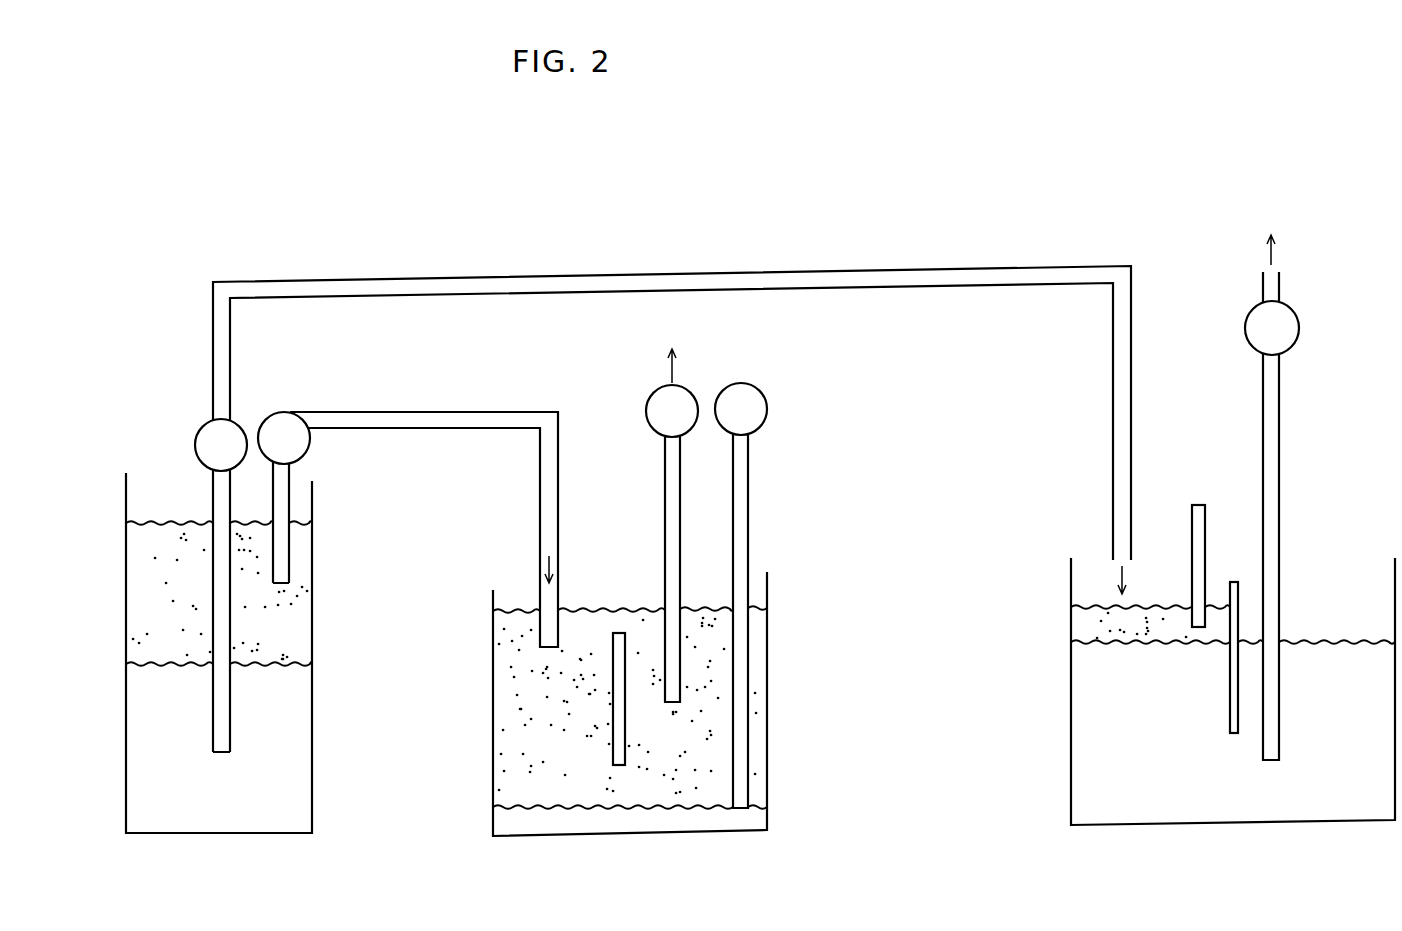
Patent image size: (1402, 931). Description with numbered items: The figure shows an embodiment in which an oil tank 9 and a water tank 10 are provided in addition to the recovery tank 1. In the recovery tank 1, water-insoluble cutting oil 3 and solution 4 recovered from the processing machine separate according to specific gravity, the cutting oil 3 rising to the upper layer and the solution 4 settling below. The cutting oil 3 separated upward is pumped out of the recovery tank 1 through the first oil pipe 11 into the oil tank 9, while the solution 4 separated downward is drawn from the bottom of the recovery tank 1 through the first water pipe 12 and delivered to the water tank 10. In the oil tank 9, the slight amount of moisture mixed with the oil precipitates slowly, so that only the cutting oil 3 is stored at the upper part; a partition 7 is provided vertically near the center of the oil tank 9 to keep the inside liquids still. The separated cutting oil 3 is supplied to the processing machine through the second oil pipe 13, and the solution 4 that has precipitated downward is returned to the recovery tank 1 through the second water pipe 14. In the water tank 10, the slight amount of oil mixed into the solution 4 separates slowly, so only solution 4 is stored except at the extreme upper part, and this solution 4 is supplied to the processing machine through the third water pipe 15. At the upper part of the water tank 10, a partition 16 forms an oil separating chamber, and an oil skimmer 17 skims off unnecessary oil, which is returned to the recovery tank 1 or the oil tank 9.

The recovery tank 1 is at (322, 770).
The water-insoluble cutting oil 3 is at (161, 605).
The solution 4 is at (154, 735).
The partition 7 is at (627, 737).
The oil tank 9 is at (778, 733).
The water tank 10 is at (1060, 735).
The first oil pipe 11 is at (378, 410).
The first water pipe 12 is at (340, 280).
The second oil pipe 13 is at (663, 489).
The second water pipe 14 is at (749, 495).
The third water pipe 15 is at (1283, 412).
The partition 16 is at (1230, 707).
The oil skimmer 17 is at (1207, 512).